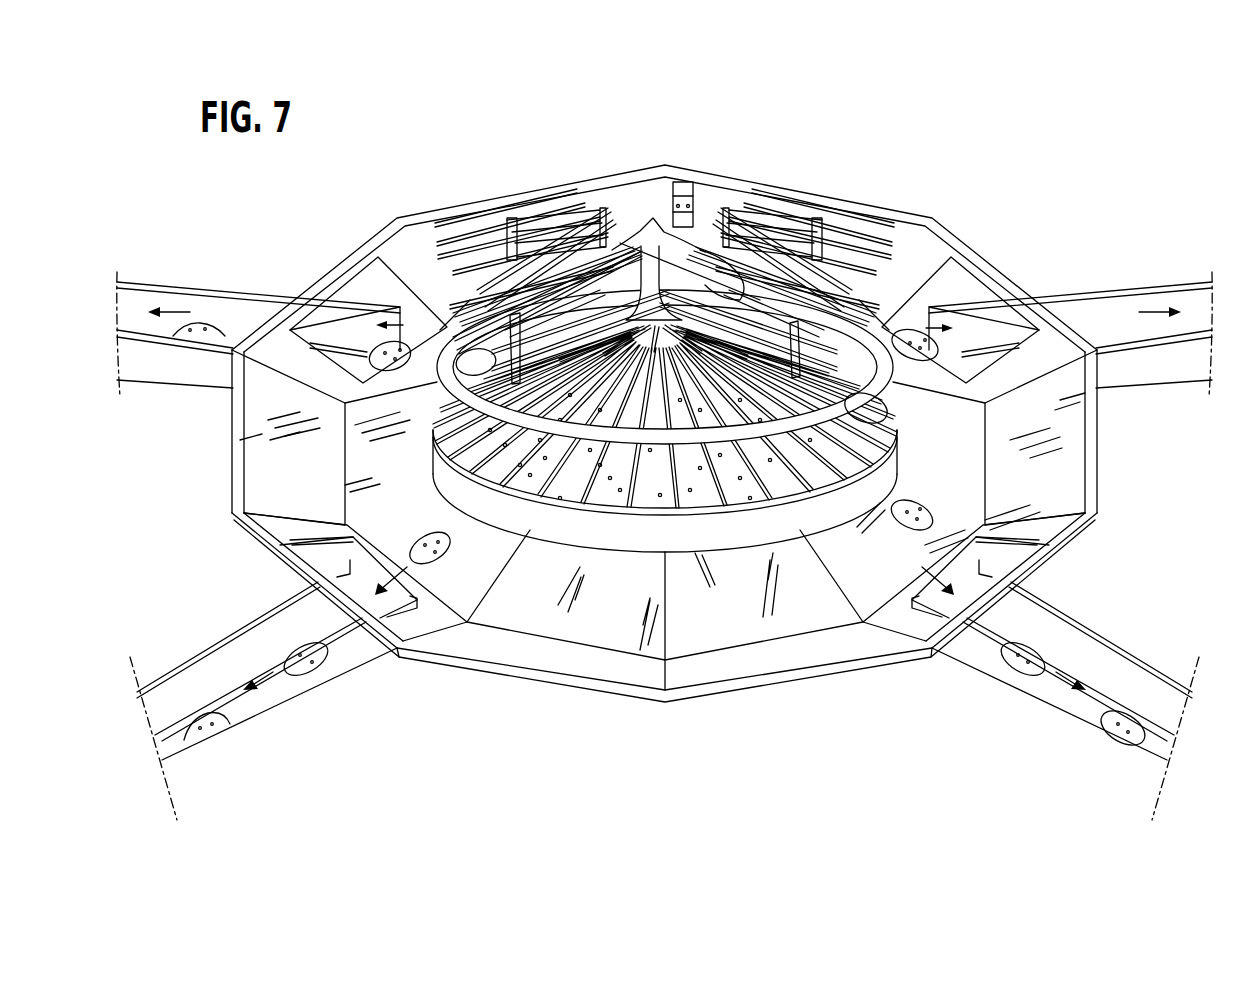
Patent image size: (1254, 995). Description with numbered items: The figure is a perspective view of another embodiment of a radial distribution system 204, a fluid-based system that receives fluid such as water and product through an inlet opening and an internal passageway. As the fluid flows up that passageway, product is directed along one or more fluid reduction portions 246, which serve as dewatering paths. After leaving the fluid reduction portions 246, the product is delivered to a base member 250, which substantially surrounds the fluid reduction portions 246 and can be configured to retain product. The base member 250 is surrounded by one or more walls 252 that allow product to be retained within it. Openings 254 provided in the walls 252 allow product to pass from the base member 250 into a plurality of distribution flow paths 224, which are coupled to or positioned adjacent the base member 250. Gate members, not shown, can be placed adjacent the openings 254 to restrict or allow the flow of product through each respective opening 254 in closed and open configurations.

The radial distribution system 204 is at (810, 122).
The distribution flow paths 224 is at (145, 353).
The fluid reduction portions 246 is at (475, 290).
The base member 250 is at (527, 607).
The walls 252 is at (718, 688).
The openings 254 is at (377, 287).